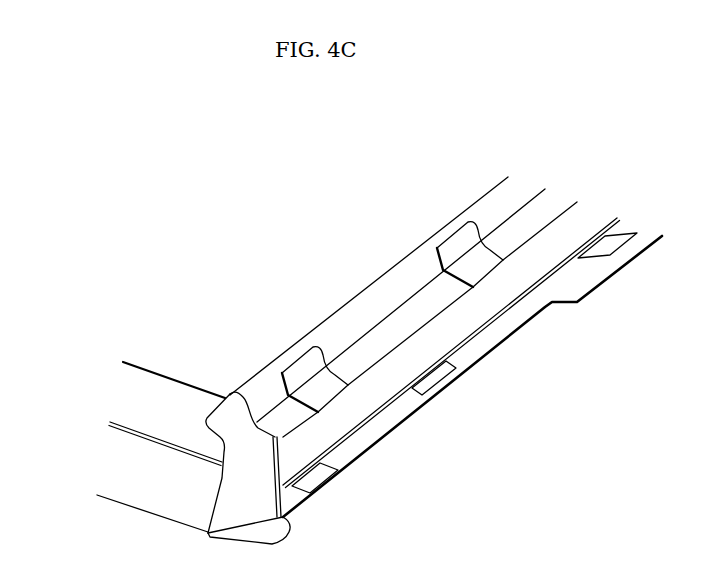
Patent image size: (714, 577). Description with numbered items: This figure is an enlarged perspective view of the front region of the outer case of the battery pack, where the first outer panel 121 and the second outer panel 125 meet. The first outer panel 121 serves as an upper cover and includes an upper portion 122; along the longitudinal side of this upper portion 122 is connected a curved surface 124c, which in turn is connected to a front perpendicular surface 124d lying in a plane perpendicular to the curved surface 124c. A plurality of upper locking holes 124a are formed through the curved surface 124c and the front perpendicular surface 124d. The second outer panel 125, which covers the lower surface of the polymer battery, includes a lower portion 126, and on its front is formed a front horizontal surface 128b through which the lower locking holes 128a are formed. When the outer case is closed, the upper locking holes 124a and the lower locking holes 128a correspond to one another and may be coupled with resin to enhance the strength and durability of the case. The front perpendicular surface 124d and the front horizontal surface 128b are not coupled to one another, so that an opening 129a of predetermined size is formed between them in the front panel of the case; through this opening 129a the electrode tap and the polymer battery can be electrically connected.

The first outer panel 121 is at (310, 243).
The upper portion 122 is at (207, 347).
The upper locking holes 124a is at (470, 267).
The curved surface 124c is at (527, 217).
The front perpendicular surface 124d is at (570, 230).
The second outer panel 125 is at (490, 376).
The lower portion 126 is at (237, 482).
The lower locking holes 128a is at (260, 465).
The front horizontal surface 128b is at (433, 397).
The opening 129a is at (318, 470).